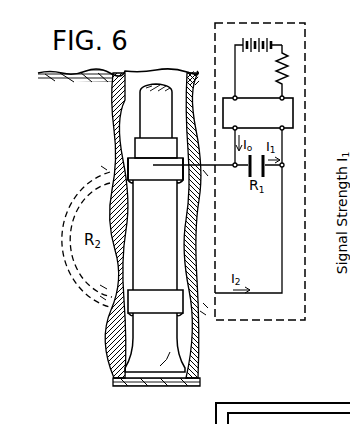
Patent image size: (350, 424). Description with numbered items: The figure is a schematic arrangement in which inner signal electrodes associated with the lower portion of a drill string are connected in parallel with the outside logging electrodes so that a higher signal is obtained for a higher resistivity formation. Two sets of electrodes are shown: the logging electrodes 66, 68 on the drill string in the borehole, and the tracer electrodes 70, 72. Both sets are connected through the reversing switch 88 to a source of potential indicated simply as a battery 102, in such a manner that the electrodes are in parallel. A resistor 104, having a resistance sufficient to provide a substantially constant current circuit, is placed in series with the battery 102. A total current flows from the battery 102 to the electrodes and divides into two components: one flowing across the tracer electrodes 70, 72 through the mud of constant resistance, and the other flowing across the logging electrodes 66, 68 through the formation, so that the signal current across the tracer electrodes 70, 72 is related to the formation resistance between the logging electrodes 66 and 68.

The logging electrode 66 is at (153, 172).
The logging electrode 68 is at (118, 312).
The tracer electrode 70 is at (249, 178).
The tracer electrode 72 is at (264, 178).
The reversing switch 88 is at (258, 113).
The battery 102 is at (246, 52).
The resistor 104 is at (289, 64).